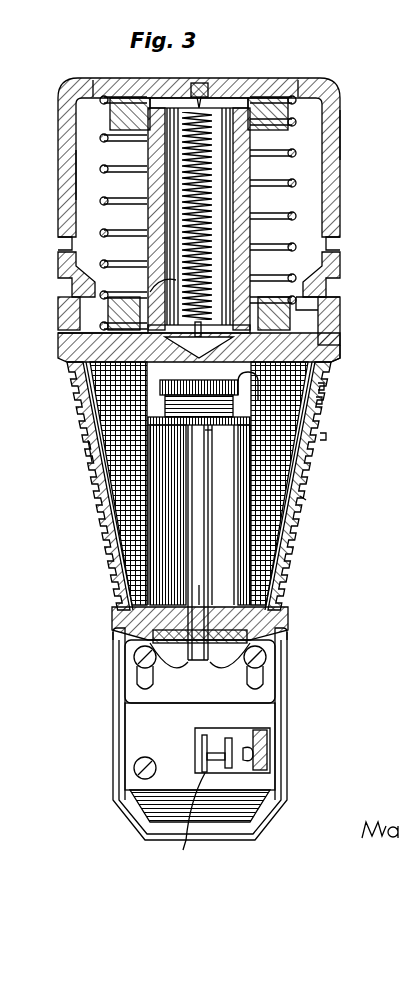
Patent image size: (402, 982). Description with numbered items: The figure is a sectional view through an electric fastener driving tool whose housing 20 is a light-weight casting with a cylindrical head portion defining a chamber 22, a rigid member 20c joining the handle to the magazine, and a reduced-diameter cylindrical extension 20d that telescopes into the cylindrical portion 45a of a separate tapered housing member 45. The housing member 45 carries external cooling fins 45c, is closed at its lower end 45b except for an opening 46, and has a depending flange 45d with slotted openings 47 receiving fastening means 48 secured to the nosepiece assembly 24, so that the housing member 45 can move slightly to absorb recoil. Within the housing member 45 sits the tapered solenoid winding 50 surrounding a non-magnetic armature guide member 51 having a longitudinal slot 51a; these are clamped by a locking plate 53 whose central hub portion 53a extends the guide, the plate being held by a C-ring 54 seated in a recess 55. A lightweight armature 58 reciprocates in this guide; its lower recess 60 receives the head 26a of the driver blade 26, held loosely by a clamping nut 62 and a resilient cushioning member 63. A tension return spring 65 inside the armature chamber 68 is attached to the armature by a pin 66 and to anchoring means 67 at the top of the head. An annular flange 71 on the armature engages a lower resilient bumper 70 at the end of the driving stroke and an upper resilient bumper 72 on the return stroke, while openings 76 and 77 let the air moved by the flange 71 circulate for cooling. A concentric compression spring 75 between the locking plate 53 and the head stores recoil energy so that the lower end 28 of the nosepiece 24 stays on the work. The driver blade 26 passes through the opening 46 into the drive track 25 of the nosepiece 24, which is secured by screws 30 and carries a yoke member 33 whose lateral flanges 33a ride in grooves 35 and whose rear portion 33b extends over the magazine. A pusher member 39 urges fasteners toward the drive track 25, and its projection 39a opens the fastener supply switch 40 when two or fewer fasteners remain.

The housing 20 is at (341, 90).
The rigid member 20c is at (336, 152).
The cylindrical extension 20d is at (322, 288).
The chamber 22 is at (78, 172).
The nosepiece assembly 24 is at (120, 736).
The drive track 25 is at (190, 668).
The driver blade 26 is at (200, 512).
The head of driver blade 26a is at (212, 450).
The lower end of nosepiece 28 is at (210, 832).
The screws 30 is at (134, 768).
The yoke member 33 is at (298, 716).
The lateral flanges 33a is at (278, 702).
The rear portion of yoke 33b is at (286, 650).
The grooves 35 is at (266, 752).
The pusher member 39 is at (182, 820).
The projection 39a is at (212, 735).
The fastener supply switch 40 is at (264, 768).
The housing member 45 is at (314, 466).
The cylindrical portion 45a is at (336, 350).
The closed lower end 45b is at (172, 600).
The cooling fins 45c is at (322, 450).
The depending flange 45d is at (112, 630).
The opening 46 is at (204, 602).
The slotted openings 47 is at (137, 686).
The fastening means 48 is at (134, 660).
The solenoid winding 50 is at (328, 390).
The armature guide member 51 is at (88, 452).
The longitudinally extending slot 51a is at (304, 498).
The locking plate 53 is at (338, 334).
The central hub portion 53a is at (337, 302).
The C-ring 54 is at (68, 336).
The recess 55 is at (60, 312).
The armature 58 is at (288, 134).
The recess 60 is at (162, 392).
The clamping nut 62 is at (92, 424).
The resilient cushioning member 63 is at (199, 515).
The return spring 65 is at (222, 98).
The pin 66 is at (150, 292).
The spring anchoring means 67 is at (190, 90).
The chamber 68 is at (248, 166).
The resilient bumper 70 is at (62, 362).
The annular flange 71 is at (100, 126).
The resilient bumper 72 is at (262, 98).
The compression spring 75 is at (286, 188).
The openings 76 is at (94, 86).
The openings 77 is at (62, 246).